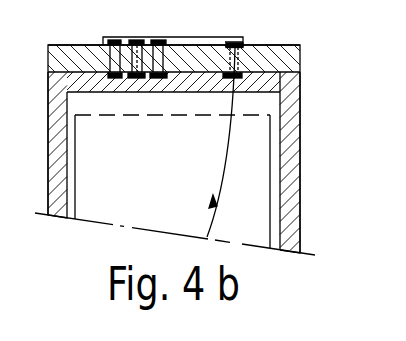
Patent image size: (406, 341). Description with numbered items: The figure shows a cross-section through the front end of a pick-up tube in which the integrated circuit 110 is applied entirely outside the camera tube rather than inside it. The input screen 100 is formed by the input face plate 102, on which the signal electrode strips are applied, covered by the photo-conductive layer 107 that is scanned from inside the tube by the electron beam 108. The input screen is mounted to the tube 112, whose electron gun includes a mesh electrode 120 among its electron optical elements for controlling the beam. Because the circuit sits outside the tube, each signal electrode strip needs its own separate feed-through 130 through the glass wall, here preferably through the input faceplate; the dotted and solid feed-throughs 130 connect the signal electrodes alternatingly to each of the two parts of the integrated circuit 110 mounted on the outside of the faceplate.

The input screen 100 is at (44, 46).
The input face plate 102 is at (277, 60).
The photo-conductive layer 107 is at (197, 80).
The electron beam 108 is at (220, 183).
The integrated circuit 110 is at (127, 39).
The tube 112 is at (287, 198).
The mesh electrode 120 is at (147, 117).
The feed-through 130 is at (148, 58).